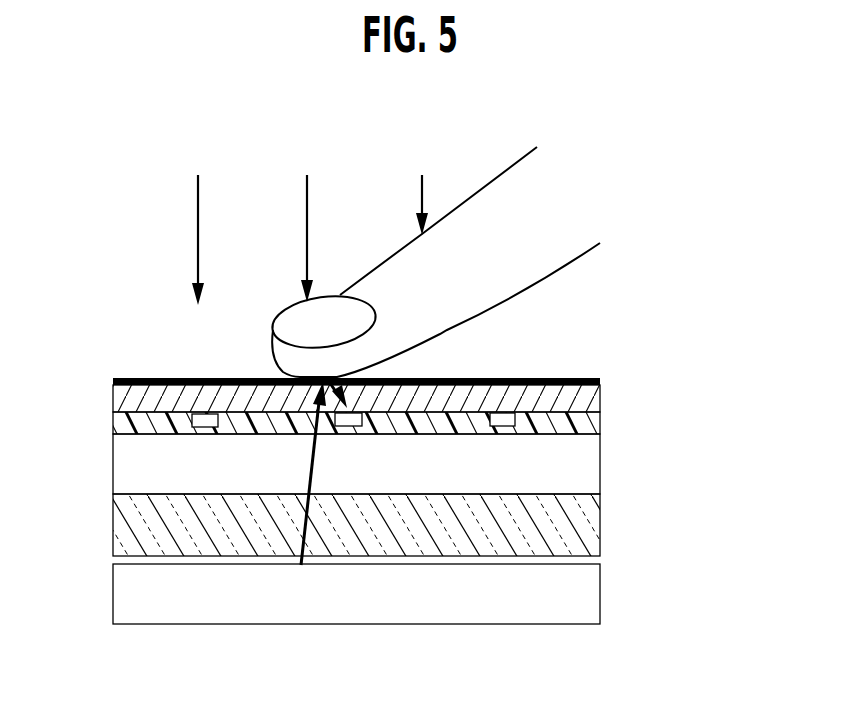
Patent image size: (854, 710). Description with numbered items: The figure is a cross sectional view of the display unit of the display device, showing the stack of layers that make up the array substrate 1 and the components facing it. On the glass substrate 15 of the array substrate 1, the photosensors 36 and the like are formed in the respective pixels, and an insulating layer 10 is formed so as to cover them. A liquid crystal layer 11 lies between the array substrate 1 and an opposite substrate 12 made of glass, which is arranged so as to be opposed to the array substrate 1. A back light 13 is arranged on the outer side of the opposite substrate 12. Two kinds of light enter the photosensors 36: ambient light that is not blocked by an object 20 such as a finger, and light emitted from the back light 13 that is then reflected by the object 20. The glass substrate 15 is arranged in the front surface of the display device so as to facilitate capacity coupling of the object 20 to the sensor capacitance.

The array substrate 1 is at (401, 405).
The insulating layer 10 is at (601, 426).
The liquid crystal layer 11 is at (601, 464).
The opposite substrate 12 is at (601, 522).
The back light 13 is at (601, 594).
The glass substrate 15 is at (601, 395).
The object 20 is at (506, 188).
The photosensor 36 is at (422, 380).